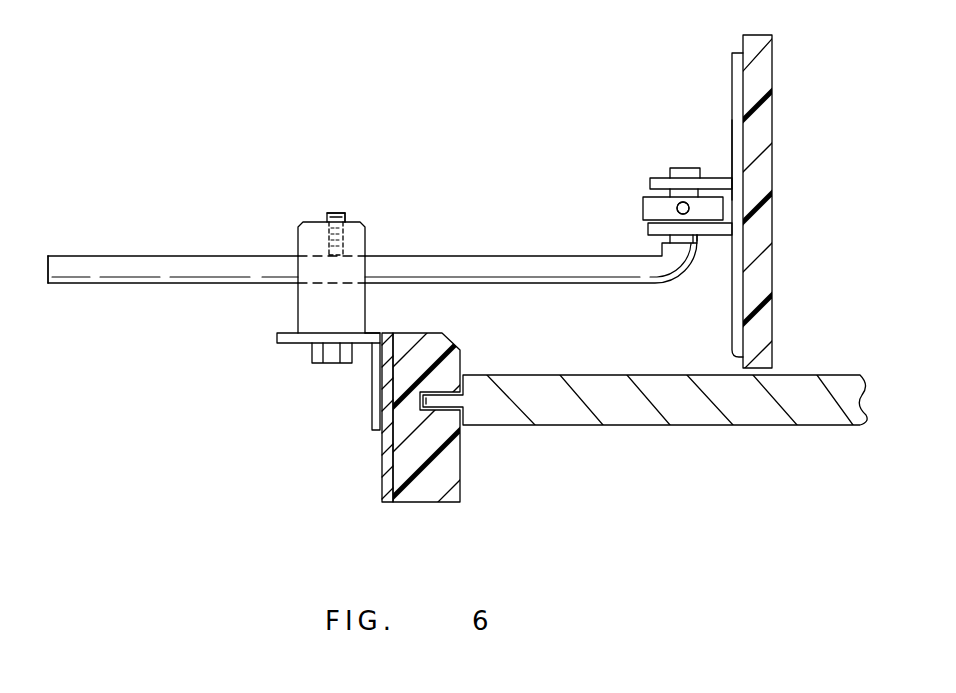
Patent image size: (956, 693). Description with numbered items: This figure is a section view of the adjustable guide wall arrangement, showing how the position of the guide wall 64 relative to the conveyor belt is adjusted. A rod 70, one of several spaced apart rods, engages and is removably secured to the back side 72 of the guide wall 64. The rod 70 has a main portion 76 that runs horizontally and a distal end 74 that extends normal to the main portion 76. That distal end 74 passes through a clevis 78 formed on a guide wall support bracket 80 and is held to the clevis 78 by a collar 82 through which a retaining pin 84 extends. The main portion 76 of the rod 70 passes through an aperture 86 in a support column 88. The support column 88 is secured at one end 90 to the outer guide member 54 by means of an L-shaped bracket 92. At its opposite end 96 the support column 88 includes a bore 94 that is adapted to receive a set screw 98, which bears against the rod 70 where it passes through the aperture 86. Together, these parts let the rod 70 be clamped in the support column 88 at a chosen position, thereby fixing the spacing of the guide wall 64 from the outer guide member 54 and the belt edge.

The outer guide member 54 is at (460, 484).
The guide wall 64 is at (772, 60).
The rod 70 is at (95, 256).
The back side 72 is at (742, 47).
The distal end 74 is at (700, 175).
The main portion 76 is at (203, 256).
The clevis 78 is at (723, 238).
The guide wall support bracket 80 is at (732, 133).
The collar 82 is at (643, 208).
The retaining pin 84 is at (689, 208).
The aperture 86 is at (352, 255).
The support column 88 is at (297, 306).
The one end 90 is at (367, 331).
The L-shaped bracket 92 is at (372, 390).
The bore 94 is at (327, 238).
The opposite end 96 is at (350, 215).
The set screw 98 is at (333, 213).